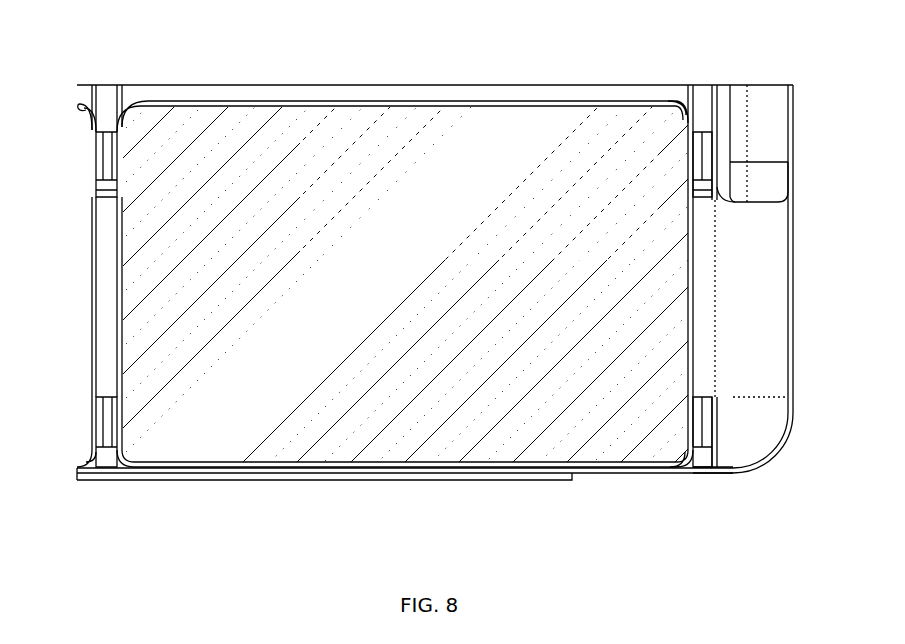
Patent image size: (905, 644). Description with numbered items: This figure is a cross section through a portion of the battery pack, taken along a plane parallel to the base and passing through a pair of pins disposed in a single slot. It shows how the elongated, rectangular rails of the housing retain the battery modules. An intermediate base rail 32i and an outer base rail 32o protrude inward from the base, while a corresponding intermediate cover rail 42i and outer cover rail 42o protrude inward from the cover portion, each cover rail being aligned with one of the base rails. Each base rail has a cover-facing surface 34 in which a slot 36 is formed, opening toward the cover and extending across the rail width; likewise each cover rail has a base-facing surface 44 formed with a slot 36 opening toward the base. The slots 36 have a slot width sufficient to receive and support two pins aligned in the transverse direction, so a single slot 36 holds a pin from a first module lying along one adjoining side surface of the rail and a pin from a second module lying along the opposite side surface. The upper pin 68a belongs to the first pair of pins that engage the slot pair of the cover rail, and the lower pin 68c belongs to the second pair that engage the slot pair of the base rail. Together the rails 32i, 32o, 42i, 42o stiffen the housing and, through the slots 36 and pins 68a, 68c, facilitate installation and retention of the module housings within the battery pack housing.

The intermediate base rail 32i is at (121, 470).
The outer base rail 32o is at (700, 463).
The cover-facing surface 34 is at (95, 395).
The slot 36 is at (104, 188).
The intermediate cover rail 42i is at (104, 100).
The outer cover rail 42o is at (701, 100).
The base-facing surface 44 is at (107, 200).
The pin 68a is at (685, 147).
The pin 68c is at (690, 430).